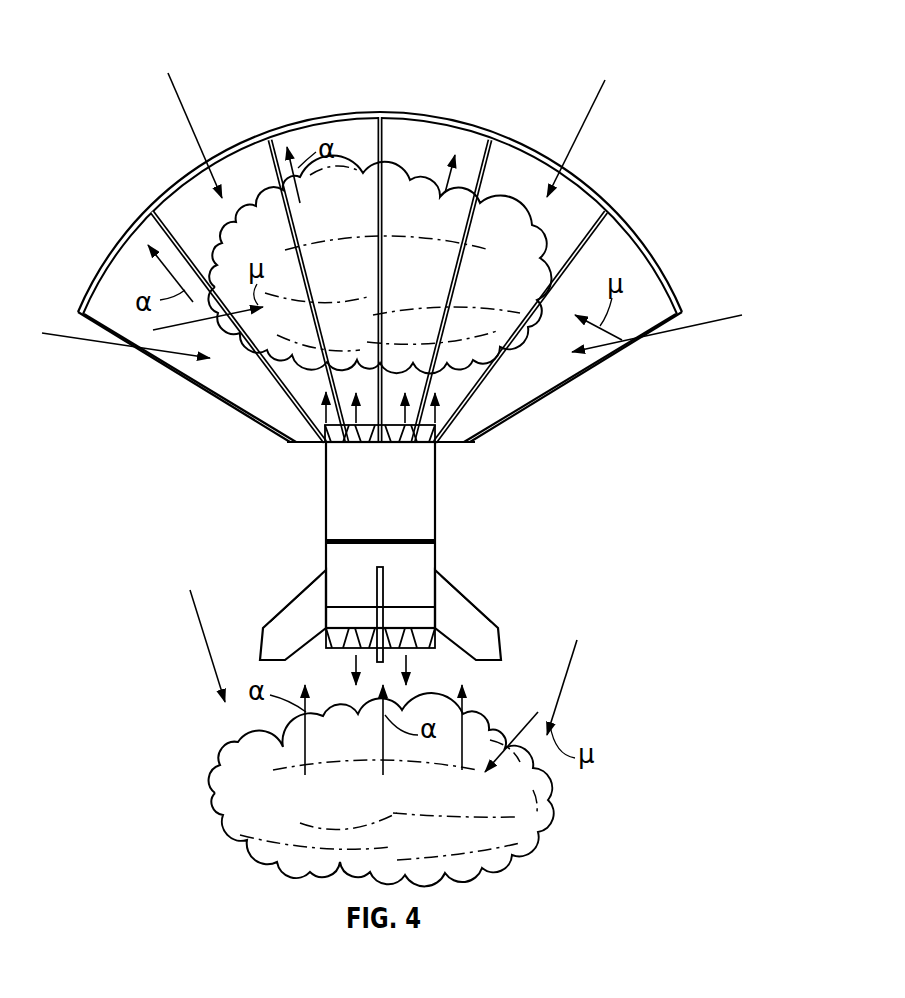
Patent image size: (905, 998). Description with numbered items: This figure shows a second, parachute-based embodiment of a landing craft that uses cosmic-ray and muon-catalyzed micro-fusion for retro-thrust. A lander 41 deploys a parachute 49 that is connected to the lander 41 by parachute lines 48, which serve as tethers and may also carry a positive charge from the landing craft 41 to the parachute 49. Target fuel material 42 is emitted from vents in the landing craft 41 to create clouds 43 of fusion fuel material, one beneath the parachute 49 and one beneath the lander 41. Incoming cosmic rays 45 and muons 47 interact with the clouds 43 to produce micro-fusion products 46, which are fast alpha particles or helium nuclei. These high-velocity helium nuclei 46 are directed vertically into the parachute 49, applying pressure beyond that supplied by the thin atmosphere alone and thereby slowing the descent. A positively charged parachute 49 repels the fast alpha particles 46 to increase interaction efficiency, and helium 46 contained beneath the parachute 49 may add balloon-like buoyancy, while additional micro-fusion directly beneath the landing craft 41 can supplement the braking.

The lander 41 is at (326, 500).
The target fuel material 42 is at (323, 405).
The clouds 43 is at (565, 381).
The cosmic rays 45 is at (578, 124).
The micro-fusion products 46 is at (450, 170).
The muons 47 is at (606, 358).
The parachute lines 48 is at (190, 383).
The parachute 49 is at (371, 112).